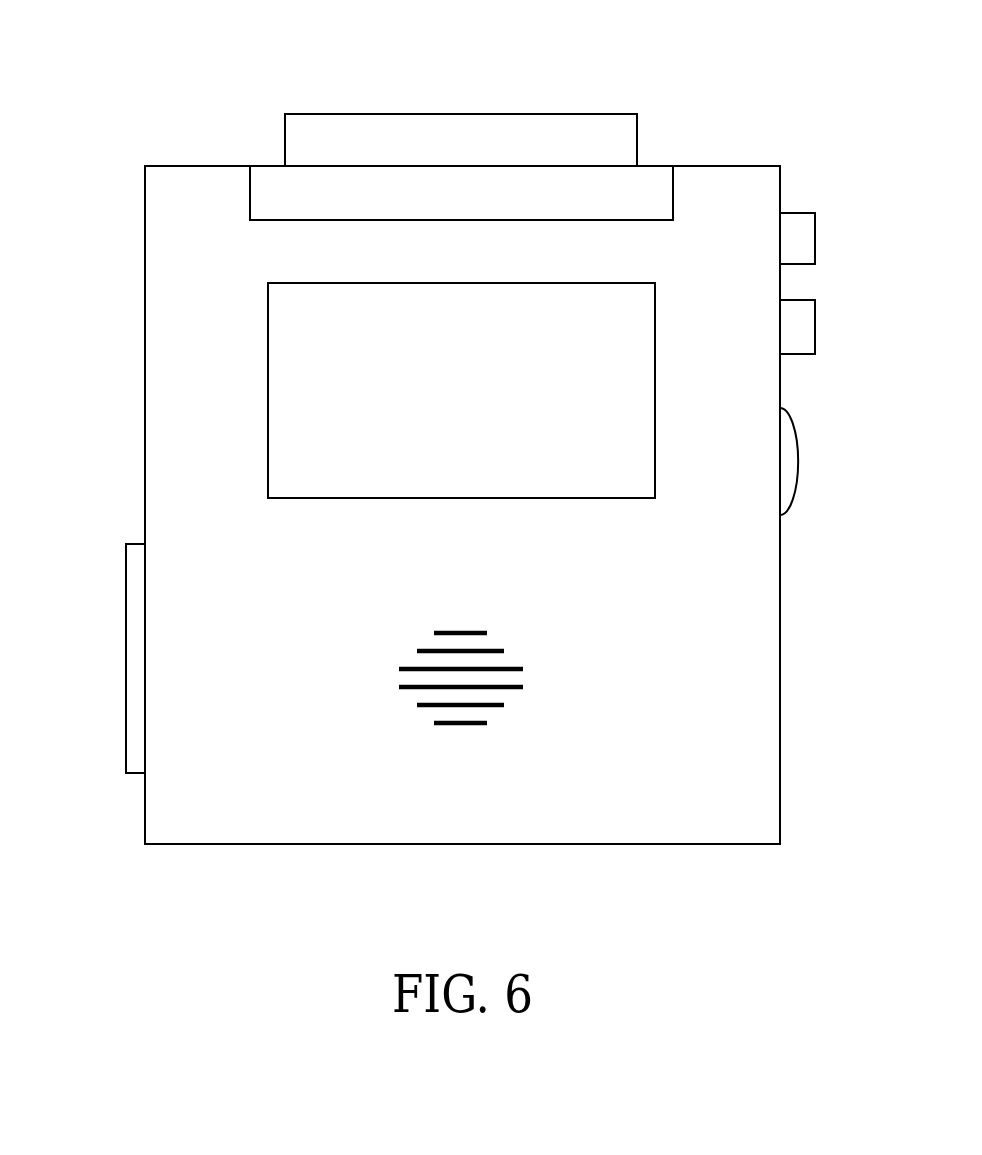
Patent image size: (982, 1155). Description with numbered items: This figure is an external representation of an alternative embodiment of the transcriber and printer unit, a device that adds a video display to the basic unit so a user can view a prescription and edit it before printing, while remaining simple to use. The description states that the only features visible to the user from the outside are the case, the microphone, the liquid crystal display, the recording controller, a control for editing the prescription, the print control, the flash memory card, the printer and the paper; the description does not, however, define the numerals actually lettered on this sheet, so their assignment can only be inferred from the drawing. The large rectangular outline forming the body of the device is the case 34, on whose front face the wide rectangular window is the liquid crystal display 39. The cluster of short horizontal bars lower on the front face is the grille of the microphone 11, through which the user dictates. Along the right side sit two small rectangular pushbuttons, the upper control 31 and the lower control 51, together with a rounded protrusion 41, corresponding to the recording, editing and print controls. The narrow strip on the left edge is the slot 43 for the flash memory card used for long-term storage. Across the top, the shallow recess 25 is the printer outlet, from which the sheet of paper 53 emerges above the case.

The speaker 11 is at (410, 692).
The top panel 25 is at (267, 166).
The button 31 is at (815, 238).
The housing 34 is at (583, 844).
The display 39 is at (268, 468).
The knob 41 is at (797, 473).
The side tab 43 is at (126, 700).
The button 51 is at (815, 327).
The top raised portion 53 is at (527, 114).